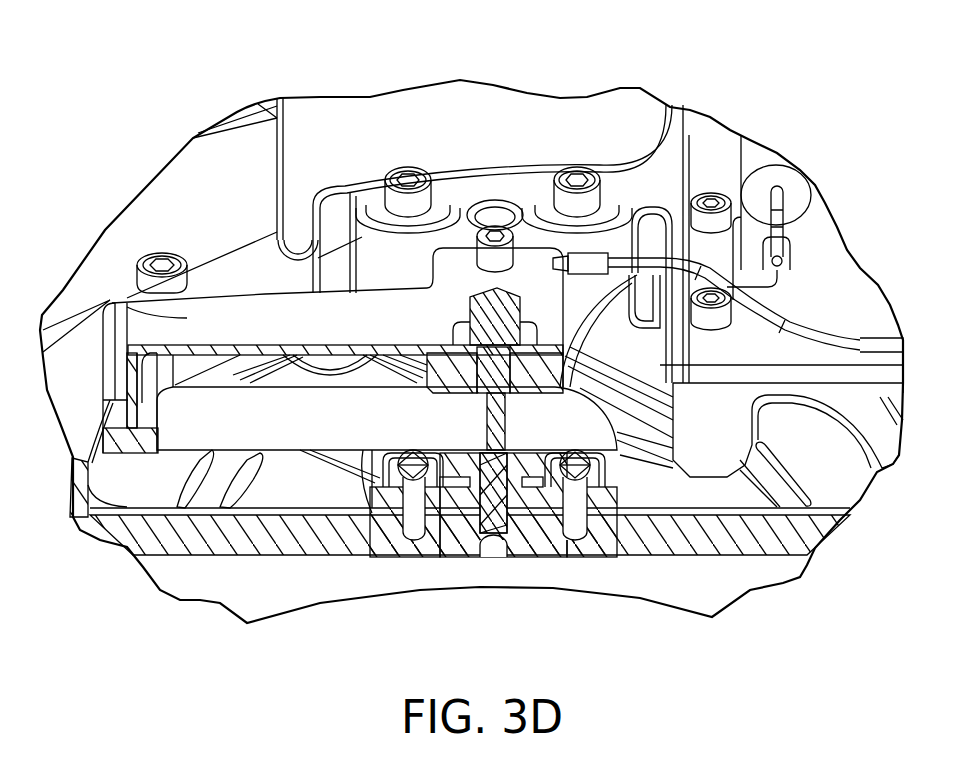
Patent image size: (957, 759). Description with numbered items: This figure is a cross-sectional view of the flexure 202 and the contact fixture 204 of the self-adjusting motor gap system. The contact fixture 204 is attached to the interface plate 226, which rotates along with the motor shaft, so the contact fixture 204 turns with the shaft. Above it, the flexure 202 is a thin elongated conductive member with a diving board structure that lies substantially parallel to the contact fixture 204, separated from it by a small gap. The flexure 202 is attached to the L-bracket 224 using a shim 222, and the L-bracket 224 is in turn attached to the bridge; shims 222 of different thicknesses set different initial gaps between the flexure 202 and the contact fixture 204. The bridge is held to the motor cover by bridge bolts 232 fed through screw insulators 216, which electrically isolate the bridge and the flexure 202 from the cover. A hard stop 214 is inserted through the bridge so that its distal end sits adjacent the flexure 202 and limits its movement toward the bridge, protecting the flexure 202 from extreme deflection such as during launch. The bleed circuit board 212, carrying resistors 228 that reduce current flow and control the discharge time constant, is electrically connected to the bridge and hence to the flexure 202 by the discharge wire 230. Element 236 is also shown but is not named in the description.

The flexure 202 is at (210, 433).
The contact fixture 204 is at (493, 517).
The bleed circuit board 212 is at (715, 163).
The hard stop 214 is at (497, 312).
The screw insulator 216 is at (363, 213).
The shim 222 is at (122, 442).
The L-bracket 224 is at (187, 317).
The interface plate 226 is at (737, 543).
The resistors 228 is at (763, 157).
The discharge wire 230 is at (835, 355).
The bridge bolt 232 is at (407, 173).
The screw 236 is at (490, 217).